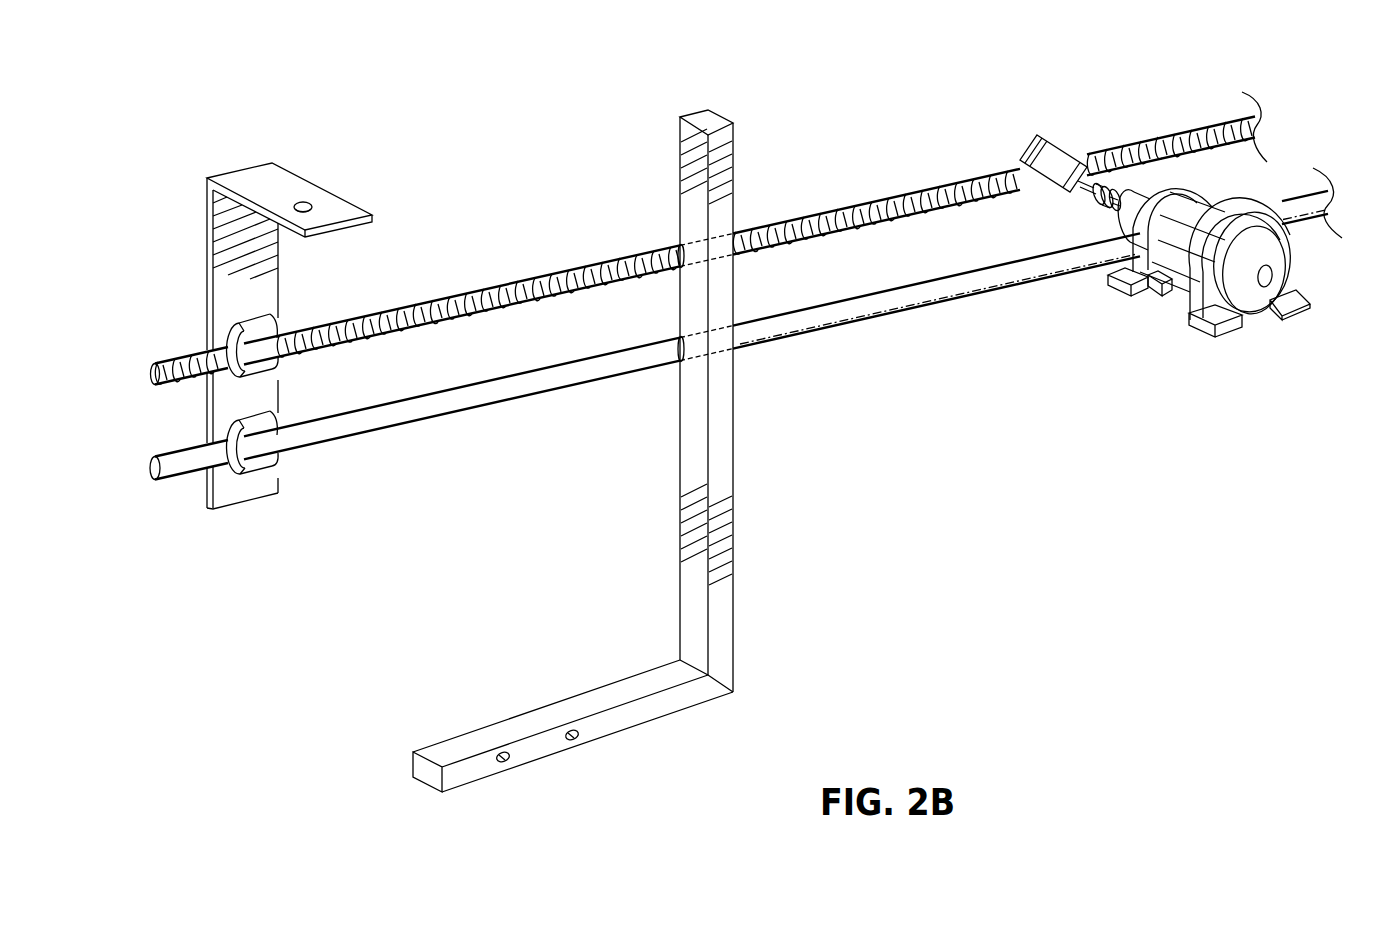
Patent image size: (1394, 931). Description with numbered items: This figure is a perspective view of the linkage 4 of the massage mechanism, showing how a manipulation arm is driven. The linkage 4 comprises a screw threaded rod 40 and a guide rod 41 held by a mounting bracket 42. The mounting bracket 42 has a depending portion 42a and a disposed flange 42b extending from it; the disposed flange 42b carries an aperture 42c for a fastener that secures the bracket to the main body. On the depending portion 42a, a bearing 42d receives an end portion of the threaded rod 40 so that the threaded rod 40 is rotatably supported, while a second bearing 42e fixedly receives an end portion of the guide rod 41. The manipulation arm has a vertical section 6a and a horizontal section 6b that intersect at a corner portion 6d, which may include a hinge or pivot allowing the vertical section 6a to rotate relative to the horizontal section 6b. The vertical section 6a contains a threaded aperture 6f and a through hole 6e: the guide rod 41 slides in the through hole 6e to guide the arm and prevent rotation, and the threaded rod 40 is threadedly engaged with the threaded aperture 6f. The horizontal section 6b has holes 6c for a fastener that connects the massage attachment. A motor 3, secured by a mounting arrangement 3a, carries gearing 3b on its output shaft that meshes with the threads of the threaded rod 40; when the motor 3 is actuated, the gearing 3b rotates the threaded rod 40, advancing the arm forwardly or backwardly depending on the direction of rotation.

The linkage 4 is at (165, 136).
The mounting bracket 42 is at (246, 148).
The depending portion 42a is at (207, 268).
The disposed flange 42b is at (283, 168).
The aperture 42c is at (310, 204).
The bearing 42d is at (228, 360).
The bearing 42e is at (227, 462).
The screw threaded rod 40 is at (473, 292).
The guide rod 41 is at (489, 414).
The vertical section 6a is at (734, 482).
The horizontal section 6b is at (644, 722).
The holes 6c is at (510, 758).
The corner portion 6d is at (734, 692).
The through hole 6e is at (718, 356).
The threaded aperture 6f is at (717, 236).
The motor 3 is at (1312, 272).
The mounting arrangement 3a is at (1232, 333).
The gearing 3b is at (1025, 142).